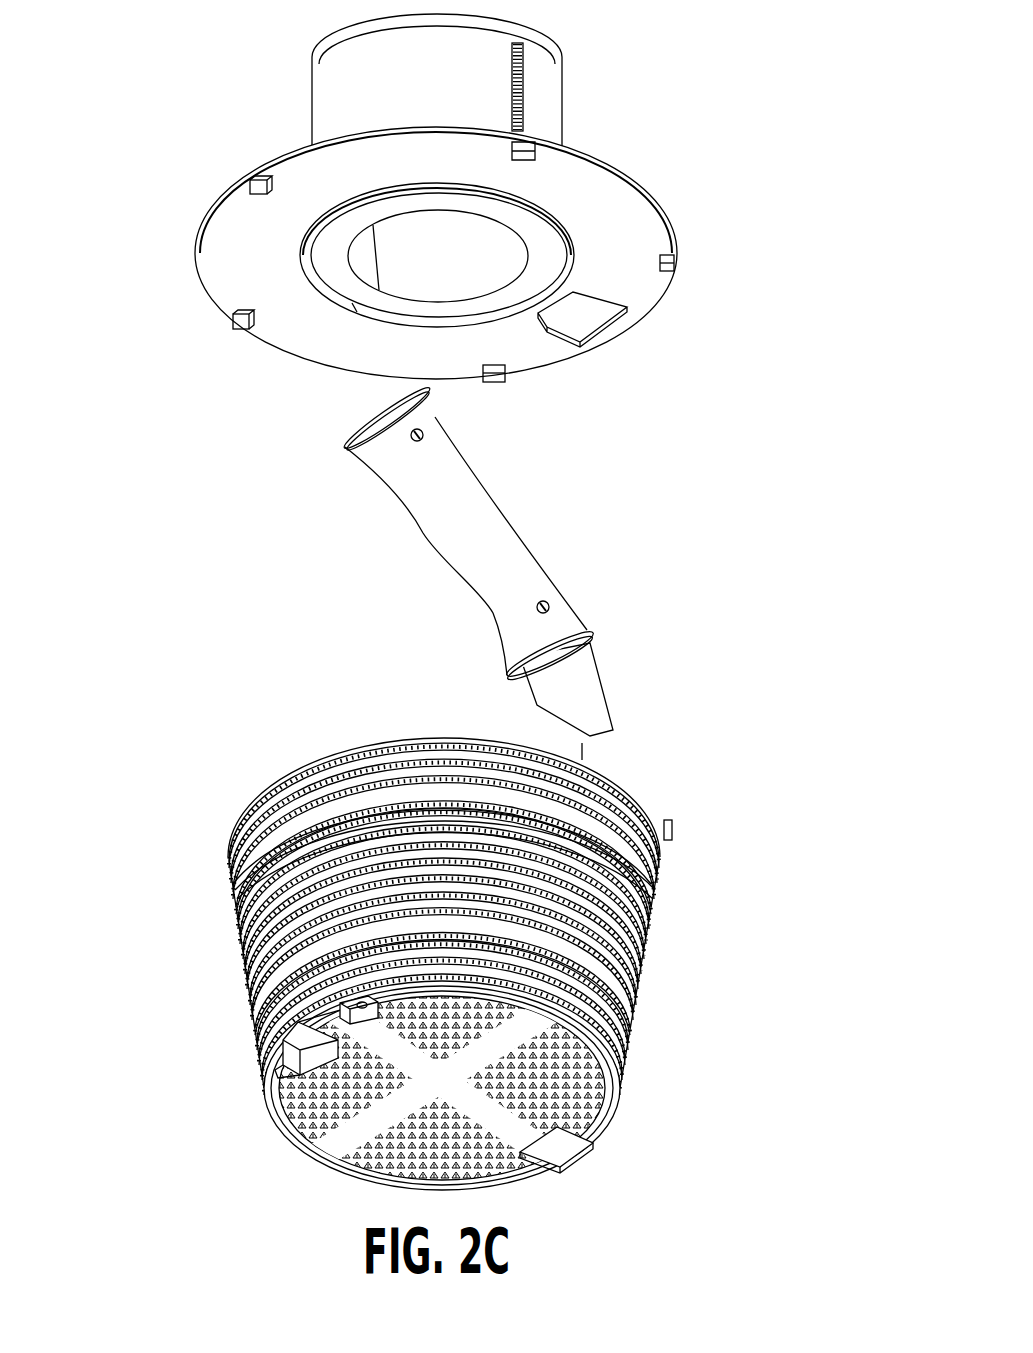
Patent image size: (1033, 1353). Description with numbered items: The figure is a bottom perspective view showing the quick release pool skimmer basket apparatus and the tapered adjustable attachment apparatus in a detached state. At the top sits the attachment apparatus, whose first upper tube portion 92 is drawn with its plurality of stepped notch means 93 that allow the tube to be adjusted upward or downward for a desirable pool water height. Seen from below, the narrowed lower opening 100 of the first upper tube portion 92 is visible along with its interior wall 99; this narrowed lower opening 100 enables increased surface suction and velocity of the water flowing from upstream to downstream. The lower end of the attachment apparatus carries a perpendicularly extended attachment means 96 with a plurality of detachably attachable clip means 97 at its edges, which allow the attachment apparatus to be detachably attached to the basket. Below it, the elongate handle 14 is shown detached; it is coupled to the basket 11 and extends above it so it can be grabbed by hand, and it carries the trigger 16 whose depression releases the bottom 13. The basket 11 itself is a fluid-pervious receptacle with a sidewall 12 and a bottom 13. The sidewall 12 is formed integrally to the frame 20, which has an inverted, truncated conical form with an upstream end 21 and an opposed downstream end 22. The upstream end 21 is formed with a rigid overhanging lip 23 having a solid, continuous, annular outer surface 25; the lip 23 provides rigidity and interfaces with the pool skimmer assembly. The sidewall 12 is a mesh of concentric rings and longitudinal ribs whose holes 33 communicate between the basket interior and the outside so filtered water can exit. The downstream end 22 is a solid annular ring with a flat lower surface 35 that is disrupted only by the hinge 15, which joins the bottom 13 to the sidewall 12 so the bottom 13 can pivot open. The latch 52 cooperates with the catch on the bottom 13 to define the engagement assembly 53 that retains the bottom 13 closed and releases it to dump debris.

The basket 11 is at (633, 758).
The sidewall 12 is at (481, 863).
The bottom 13 is at (537, 1177).
The elongate handle 14 is at (477, 571).
The hinge 15 is at (277, 1086).
The trigger 16 is at (452, 430).
The frame 20 is at (222, 765).
The upstream end 21 is at (678, 822).
The downstream end 22 is at (489, 1121).
The lip 23 is at (670, 867).
The outer surface 25 is at (205, 812).
The holes 33 is at (447, 740).
The lower surface 35 is at (270, 1053).
The latch 52 is at (603, 1166).
The engagement assembly 53 is at (560, 1153).
The first upper tube portion 92 is at (327, 112).
The stepped notch means 93 is at (517, 65).
The perpendicularly extended attachment means 96 is at (383, 254).
The detachably attachable clip means 97 is at (233, 325).
The interior wall 99 is at (375, 250).
The narrowed lower opening 100 is at (405, 300).